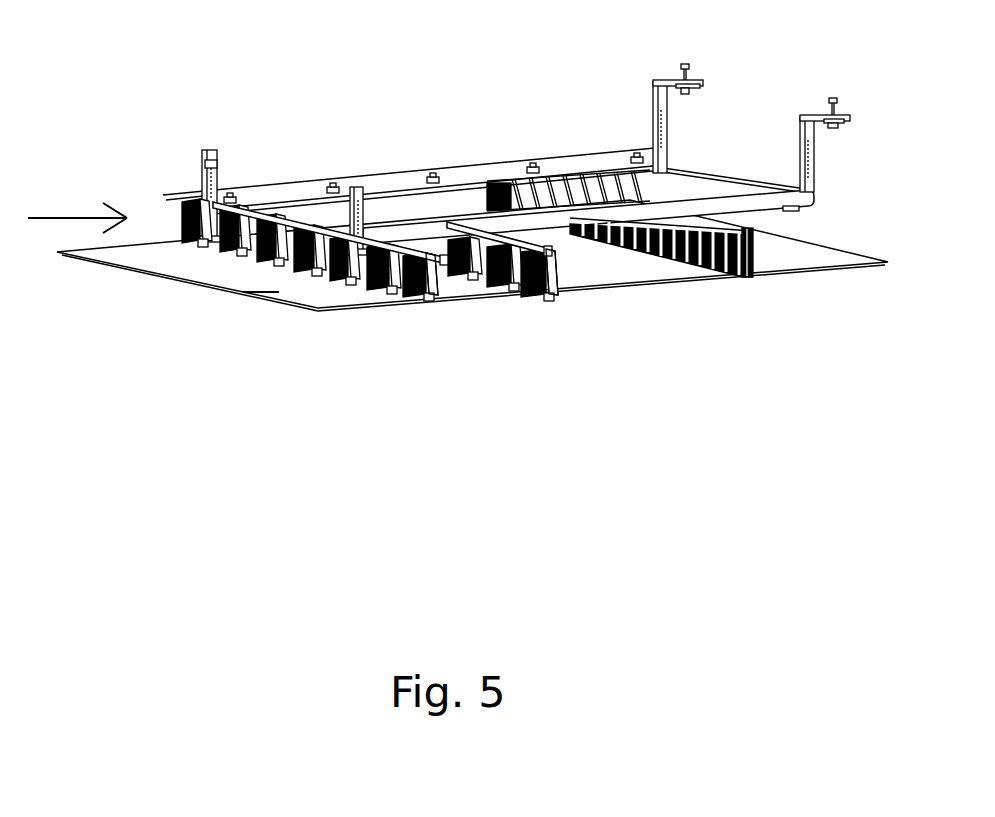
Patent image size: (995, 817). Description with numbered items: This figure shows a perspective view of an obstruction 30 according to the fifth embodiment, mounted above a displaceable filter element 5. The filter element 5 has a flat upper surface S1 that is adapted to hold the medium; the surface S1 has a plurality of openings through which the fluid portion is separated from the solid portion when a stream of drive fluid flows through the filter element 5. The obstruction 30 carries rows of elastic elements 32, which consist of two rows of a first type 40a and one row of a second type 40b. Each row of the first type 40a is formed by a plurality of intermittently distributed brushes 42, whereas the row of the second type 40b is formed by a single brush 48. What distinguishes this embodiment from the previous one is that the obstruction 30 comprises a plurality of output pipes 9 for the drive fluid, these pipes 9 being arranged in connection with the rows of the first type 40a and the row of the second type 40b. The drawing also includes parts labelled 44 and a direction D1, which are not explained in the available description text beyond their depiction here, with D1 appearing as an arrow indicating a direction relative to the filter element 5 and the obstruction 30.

The filter element 5 is at (472, 359).
The outlet pipes 9 is at (308, 212).
The obstruction 30 is at (313, 140).
The rows of elastic elements 32 is at (453, 359).
The brushes 42 is at (212, 248).
The brush 48 is at (712, 368).
The row of the first type 40a is at (436, 304).
The row of the second type 40b is at (764, 284).
The holder rail 44 is at (359, 278).
The flat upper surface S1 is at (293, 283).
The direction D1 is at (77, 210).